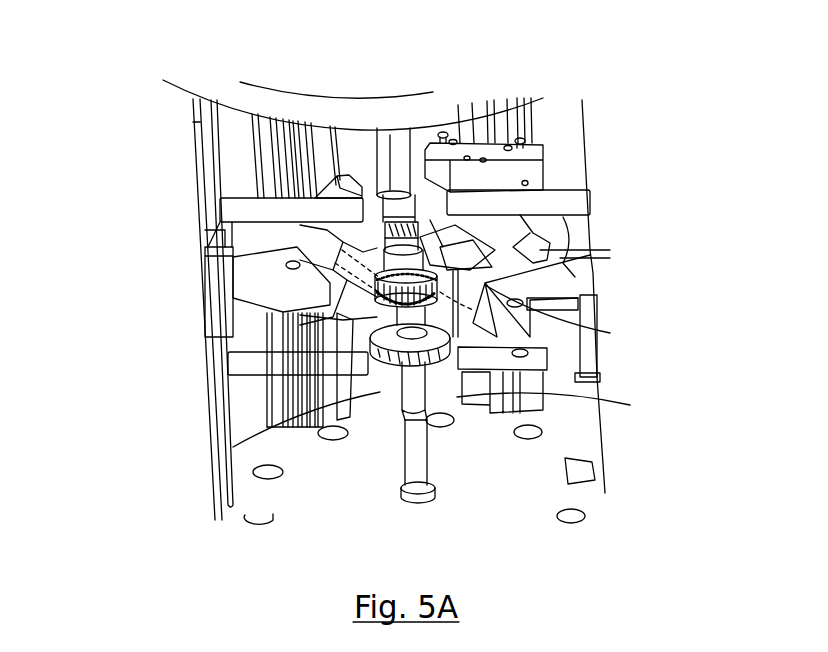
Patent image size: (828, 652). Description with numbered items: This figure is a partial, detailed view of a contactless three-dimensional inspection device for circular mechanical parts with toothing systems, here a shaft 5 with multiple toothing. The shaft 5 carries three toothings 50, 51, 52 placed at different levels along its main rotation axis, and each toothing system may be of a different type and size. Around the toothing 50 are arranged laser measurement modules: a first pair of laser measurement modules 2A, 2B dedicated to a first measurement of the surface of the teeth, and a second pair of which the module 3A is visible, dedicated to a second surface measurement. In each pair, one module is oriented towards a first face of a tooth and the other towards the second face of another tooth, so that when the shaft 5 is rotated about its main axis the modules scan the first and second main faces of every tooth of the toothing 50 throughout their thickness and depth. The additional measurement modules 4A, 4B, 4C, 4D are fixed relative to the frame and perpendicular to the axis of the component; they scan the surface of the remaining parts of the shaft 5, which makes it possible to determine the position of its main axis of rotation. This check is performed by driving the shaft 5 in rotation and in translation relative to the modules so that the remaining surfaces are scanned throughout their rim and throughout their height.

The laser measurement module 2A is at (462, 176).
The laser measurement module 2B is at (593, 253).
The laser measurement module 3A is at (205, 238).
The additional measurement module 4A is at (553, 195).
The additional measurement module 4B is at (500, 367).
The additional measurement module 4C is at (230, 355).
The additional measurement module 4D is at (233, 207).
The shaft with toothing 5 is at (398, 332).
The toothing 50 is at (460, 297).
The toothing 51 is at (379, 132).
The toothing 52 is at (445, 345).